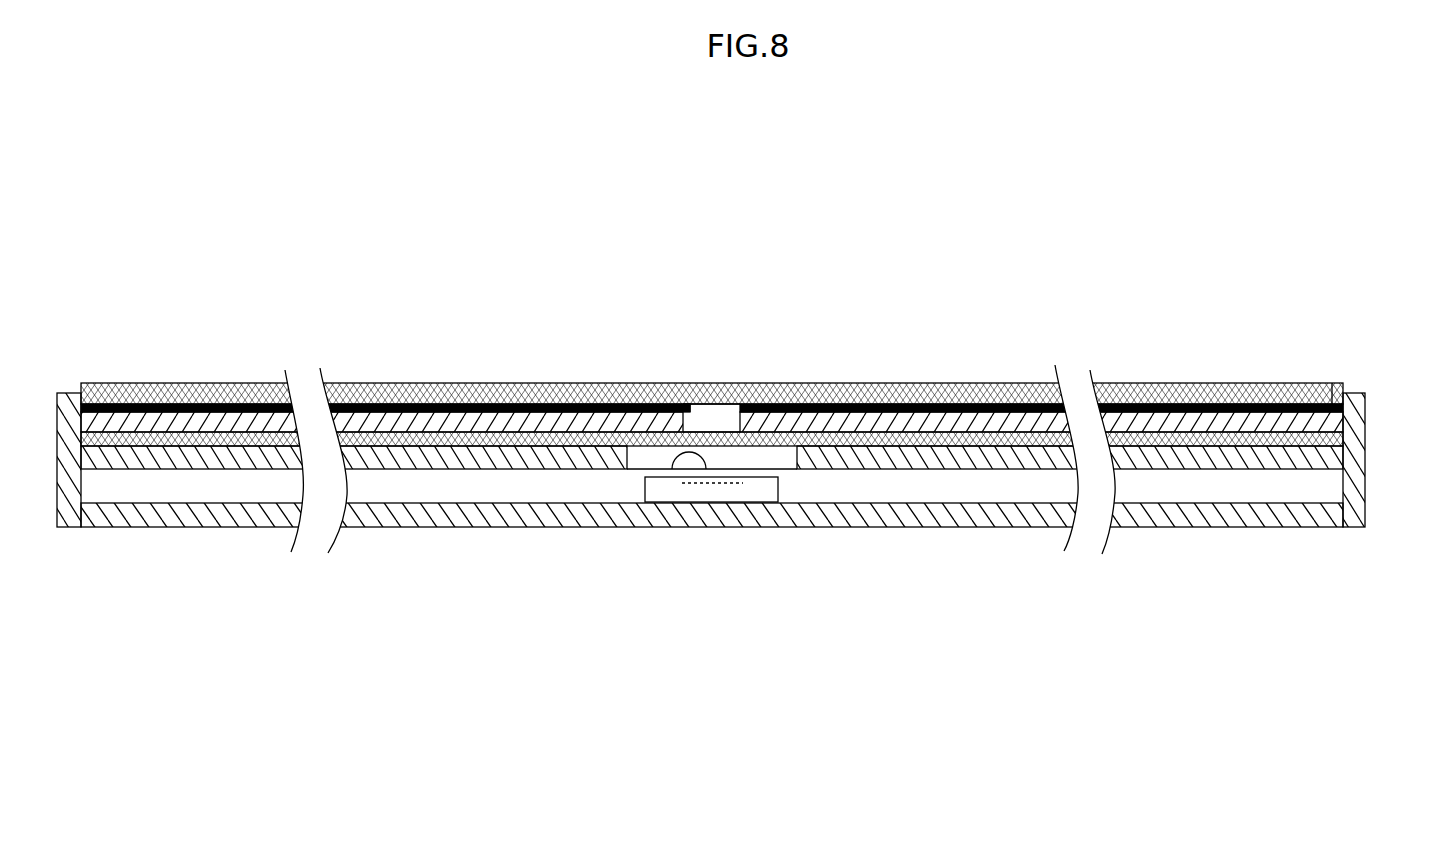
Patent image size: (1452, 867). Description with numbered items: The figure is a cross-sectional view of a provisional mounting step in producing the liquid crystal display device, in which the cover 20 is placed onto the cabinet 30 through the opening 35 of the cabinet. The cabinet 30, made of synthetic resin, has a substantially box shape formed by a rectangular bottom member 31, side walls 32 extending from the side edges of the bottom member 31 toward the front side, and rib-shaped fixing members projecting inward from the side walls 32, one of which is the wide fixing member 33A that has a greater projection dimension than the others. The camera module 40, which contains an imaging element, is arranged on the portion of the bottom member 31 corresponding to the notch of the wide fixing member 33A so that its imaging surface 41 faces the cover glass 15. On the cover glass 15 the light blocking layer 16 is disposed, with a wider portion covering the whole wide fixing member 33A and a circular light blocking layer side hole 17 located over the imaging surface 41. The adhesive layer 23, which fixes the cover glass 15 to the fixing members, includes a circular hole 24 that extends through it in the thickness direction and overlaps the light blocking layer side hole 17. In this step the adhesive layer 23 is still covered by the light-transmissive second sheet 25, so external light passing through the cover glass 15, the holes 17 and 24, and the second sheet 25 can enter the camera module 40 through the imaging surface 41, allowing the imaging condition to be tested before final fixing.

The cover glass 15 is at (1148, 393).
The light blocking layer 16 is at (1222, 404).
The light blocking layer side hole 17 is at (700, 406).
The cover 20 is at (741, 365).
The adhesive layer 23 is at (912, 428).
The hole 24 is at (727, 422).
The second sheet 25 is at (846, 440).
The cabinet 30 is at (742, 472).
The bottom member 31 is at (1203, 505).
The side wall 32 is at (1355, 490).
The wide fixing member 33A is at (1277, 457).
The opening 35 is at (1328, 392).
The camera module 40 is at (753, 490).
The imaging surface 41 is at (671, 468).